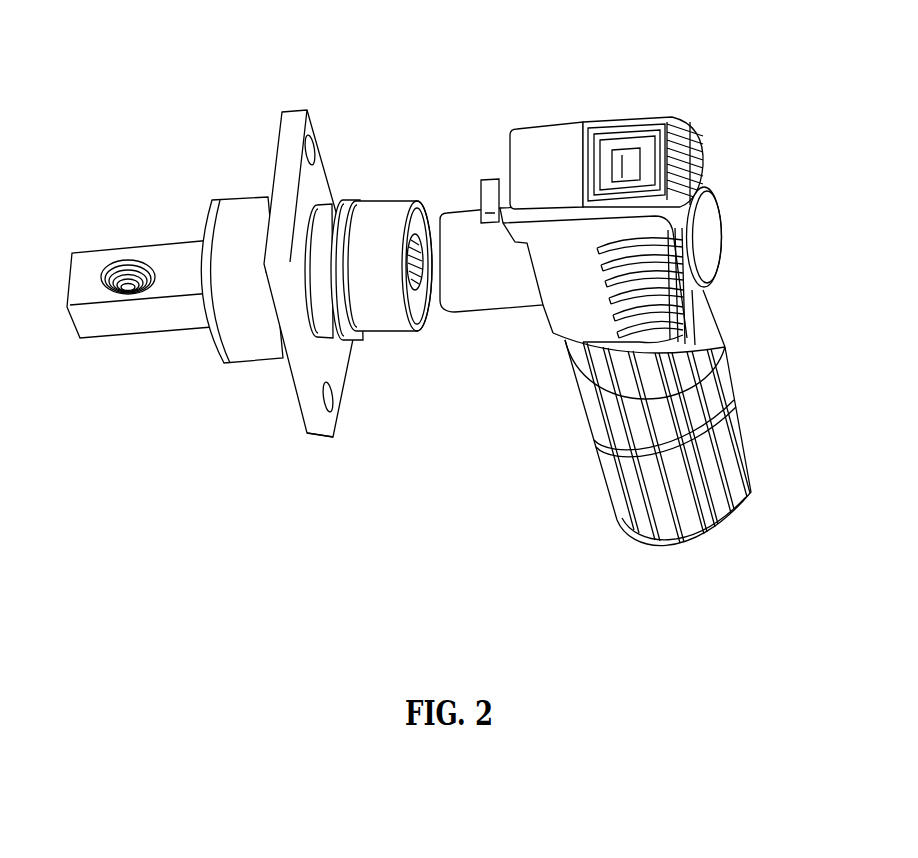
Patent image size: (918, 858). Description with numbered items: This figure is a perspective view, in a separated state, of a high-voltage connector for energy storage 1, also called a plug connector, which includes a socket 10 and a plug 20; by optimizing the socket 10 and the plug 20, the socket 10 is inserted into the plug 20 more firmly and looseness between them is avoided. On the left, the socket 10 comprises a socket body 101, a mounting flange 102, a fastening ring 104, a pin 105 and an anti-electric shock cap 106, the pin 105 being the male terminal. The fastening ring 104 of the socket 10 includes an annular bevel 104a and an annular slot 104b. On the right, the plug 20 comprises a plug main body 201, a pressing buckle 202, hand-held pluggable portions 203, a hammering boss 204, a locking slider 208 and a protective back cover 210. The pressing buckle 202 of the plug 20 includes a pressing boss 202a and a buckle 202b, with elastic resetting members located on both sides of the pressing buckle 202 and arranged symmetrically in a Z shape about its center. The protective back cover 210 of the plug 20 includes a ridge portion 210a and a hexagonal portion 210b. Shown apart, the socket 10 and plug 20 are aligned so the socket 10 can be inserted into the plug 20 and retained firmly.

The high-voltage connector for energy storage 1 is at (104, 476).
The socket 10 is at (146, 373).
The socket body 101 is at (256, 363).
The mounting flange 102 is at (324, 438).
The fastening ring 104 is at (339, 192).
The annular bevel 104a is at (368, 342).
The annular slot 104b is at (341, 338).
The pin 105 is at (140, 246).
The anti-electric shock cap 106 is at (410, 198).
The plug 20 is at (750, 376).
The plug main body 201 is at (573, 277).
The pressing buckle 202 is at (600, 127).
The pressing boss 202a is at (605, 175).
The buckle 202b is at (484, 186).
The hand-held pluggable portions 203 is at (634, 345).
The hammering boss 204 is at (714, 236).
The locking slider 208 is at (688, 134).
The protective back cover 210 is at (670, 550).
The ridge portion 210a is at (703, 364).
The hexagonal portion 210b is at (752, 483).